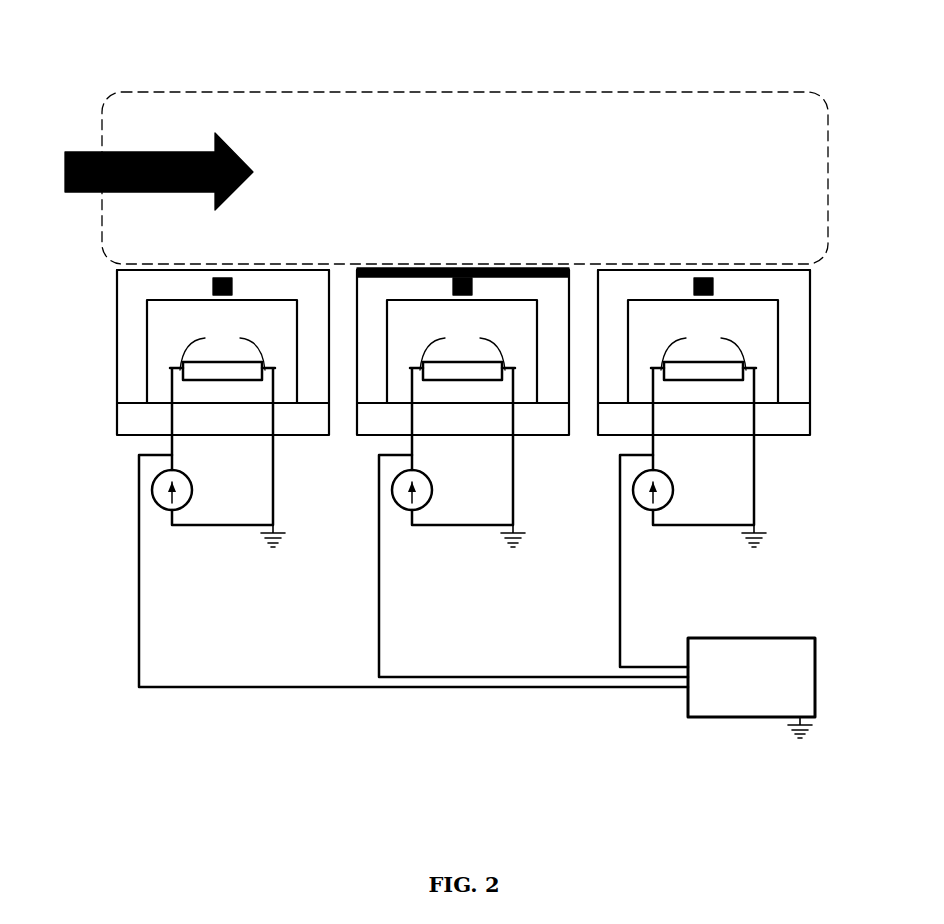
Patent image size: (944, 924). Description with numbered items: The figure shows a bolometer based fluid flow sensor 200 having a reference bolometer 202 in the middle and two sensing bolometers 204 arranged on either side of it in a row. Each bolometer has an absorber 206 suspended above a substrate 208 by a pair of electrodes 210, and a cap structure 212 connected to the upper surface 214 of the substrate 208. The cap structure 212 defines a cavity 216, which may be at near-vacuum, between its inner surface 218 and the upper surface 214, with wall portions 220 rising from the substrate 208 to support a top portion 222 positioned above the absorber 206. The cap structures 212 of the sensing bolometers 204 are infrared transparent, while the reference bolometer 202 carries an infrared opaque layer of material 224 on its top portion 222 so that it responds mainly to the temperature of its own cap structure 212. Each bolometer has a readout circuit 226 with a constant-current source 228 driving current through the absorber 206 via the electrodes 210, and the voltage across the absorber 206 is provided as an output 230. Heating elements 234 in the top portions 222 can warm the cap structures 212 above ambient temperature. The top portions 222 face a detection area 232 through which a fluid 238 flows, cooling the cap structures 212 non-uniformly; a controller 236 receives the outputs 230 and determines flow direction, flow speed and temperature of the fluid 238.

The fluid flow sensor 200 is at (780, 39).
The reference bolometer 202 is at (488, 213).
The sensing bolometer 204 is at (264, 222).
The absorber 206 is at (198, 369).
The substrate 208 is at (240, 422).
The electrodes 210 is at (463, 350).
The cap structure 212 is at (305, 288).
The upper surface of the substrate 214 is at (230, 401).
The cavity 216 is at (160, 320).
The inner surface of the cap structure 218 is at (243, 302).
The wall portions 220 is at (128, 335).
The top portion 222 is at (280, 288).
The infrared opaque layer of material 224 is at (463, 270).
The readout circuit 226 is at (279, 491).
The constant-current source 228 is at (190, 498).
The output 230 is at (139, 617).
The detection area 232 is at (262, 112).
The heating elements 234 is at (215, 279).
The controller 236 is at (740, 638).
The fluid 238 is at (155, 153).